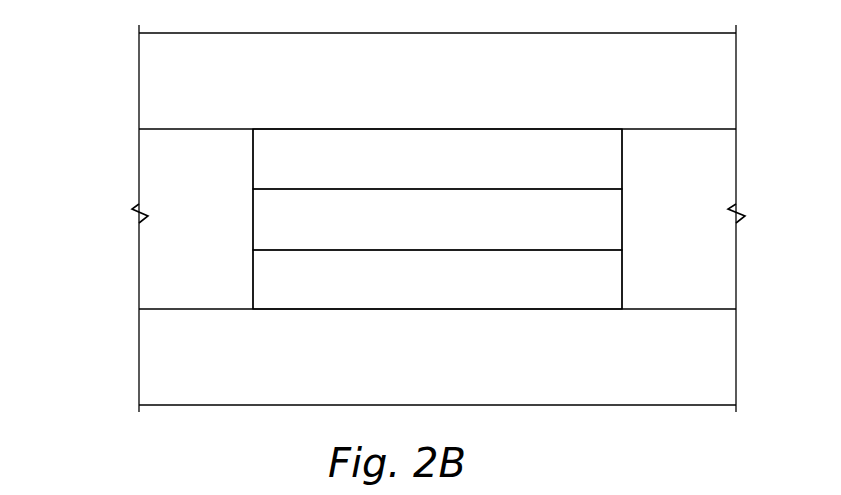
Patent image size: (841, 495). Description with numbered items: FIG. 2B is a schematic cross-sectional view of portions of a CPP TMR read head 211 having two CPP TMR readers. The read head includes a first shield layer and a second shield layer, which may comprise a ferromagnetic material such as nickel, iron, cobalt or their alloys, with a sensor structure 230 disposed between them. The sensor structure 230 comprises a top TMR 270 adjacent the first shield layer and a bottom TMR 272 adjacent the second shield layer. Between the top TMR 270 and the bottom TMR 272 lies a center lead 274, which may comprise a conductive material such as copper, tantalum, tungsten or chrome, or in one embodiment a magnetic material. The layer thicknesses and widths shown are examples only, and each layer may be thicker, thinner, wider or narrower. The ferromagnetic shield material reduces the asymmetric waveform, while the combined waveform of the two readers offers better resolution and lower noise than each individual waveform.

The semiconductor device 211 is at (108, 33).
The sensor structure 230 is at (339, 219).
The bottom TMR 272 is at (437, 159).
The center lead 274 is at (437, 219).
The top TMR 270 is at (437, 279).